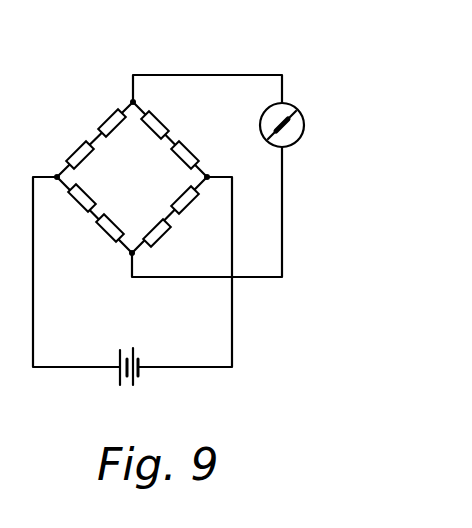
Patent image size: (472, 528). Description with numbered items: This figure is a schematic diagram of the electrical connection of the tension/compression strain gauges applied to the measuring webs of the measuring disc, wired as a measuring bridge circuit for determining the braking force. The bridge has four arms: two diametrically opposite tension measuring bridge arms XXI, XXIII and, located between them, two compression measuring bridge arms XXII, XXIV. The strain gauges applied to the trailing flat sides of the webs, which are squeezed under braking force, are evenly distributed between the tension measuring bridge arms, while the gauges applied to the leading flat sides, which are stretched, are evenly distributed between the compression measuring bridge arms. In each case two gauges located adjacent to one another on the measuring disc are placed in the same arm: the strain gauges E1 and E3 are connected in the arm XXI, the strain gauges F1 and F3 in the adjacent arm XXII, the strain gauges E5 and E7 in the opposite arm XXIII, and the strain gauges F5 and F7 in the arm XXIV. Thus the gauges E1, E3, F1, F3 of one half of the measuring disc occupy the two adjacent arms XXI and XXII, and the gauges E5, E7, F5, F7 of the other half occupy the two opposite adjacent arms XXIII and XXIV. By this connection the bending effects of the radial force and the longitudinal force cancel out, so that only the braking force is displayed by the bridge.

The tension/compression strain gauge E1 is at (110, 116).
The tension/compression strain gauge E3 is at (78, 147).
The tension/compression strain gauge E5 is at (222, 205).
The tension/compression strain gauge E7 is at (200, 242).
The tension/compression strain gauge F1 is at (157, 100).
The tension/compression strain gauge F3 is at (187, 127).
The tension/compression strain gauge F5 is at (76, 209).
The tension/compression strain gauge F7 is at (102, 235).
The tension measuring bridge arm XXI is at (107, 70).
The compression measuring bridge arm XXII is at (158, 83).
The tension measuring bridge arm XXIII is at (207, 240).
The compression measuring bridge arm XXIV is at (75, 180).